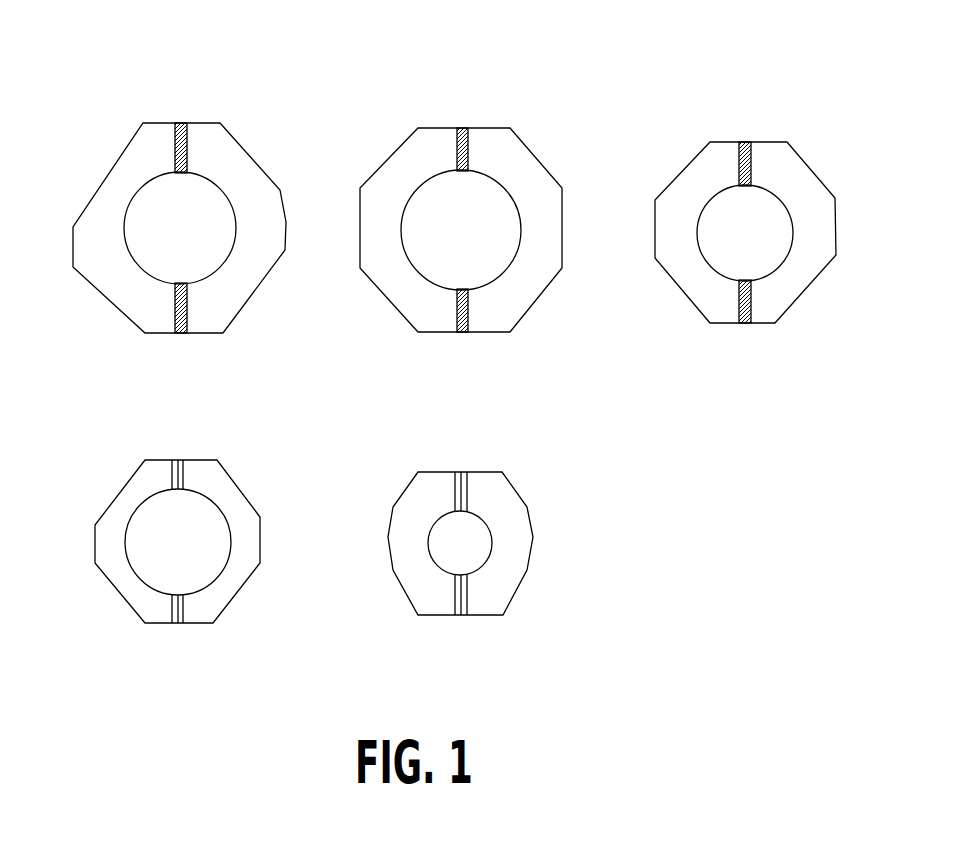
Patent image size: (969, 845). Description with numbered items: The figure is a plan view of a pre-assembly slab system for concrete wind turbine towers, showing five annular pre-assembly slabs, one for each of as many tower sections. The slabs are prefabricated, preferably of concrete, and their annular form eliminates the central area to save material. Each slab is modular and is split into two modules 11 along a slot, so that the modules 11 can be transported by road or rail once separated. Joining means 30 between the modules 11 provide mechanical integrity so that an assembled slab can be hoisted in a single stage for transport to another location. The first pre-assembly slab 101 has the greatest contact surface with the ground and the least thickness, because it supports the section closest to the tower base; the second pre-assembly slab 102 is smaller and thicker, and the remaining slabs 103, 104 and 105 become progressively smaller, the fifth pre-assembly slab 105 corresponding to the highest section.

The first pre-assembly slab 101 is at (242, 128).
The second pre-assembly slab 102 is at (545, 135).
The third pre-assembly slab 103 is at (793, 125).
The fourth pre-assembly slab 104 is at (260, 495).
The fifth pre-assembly slab 105 is at (537, 495).
The joining means 30 is at (462, 130).
The module 11 is at (210, 300).